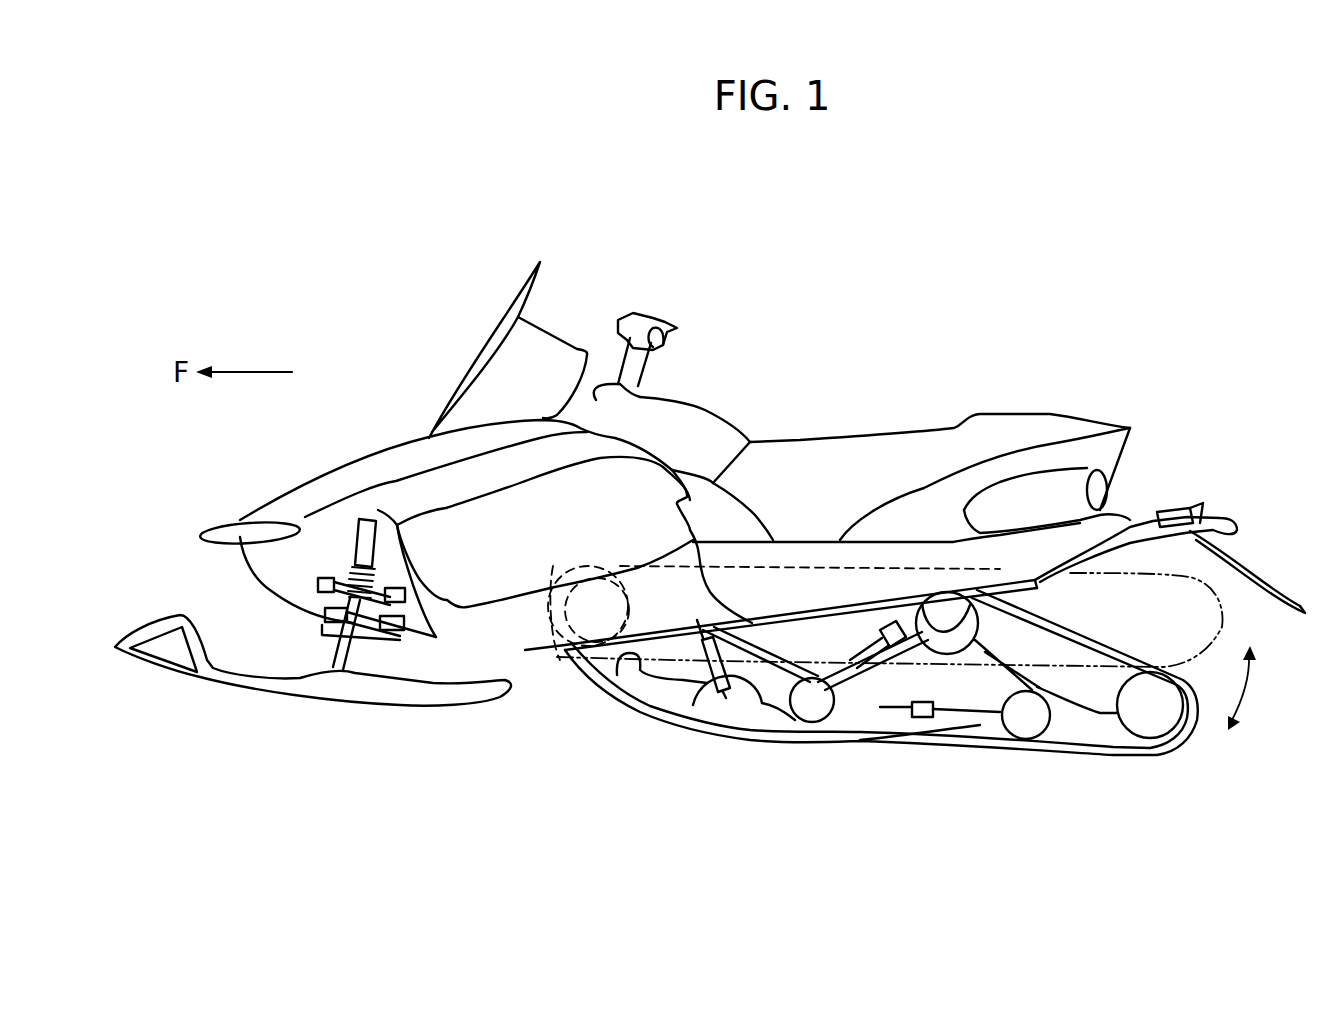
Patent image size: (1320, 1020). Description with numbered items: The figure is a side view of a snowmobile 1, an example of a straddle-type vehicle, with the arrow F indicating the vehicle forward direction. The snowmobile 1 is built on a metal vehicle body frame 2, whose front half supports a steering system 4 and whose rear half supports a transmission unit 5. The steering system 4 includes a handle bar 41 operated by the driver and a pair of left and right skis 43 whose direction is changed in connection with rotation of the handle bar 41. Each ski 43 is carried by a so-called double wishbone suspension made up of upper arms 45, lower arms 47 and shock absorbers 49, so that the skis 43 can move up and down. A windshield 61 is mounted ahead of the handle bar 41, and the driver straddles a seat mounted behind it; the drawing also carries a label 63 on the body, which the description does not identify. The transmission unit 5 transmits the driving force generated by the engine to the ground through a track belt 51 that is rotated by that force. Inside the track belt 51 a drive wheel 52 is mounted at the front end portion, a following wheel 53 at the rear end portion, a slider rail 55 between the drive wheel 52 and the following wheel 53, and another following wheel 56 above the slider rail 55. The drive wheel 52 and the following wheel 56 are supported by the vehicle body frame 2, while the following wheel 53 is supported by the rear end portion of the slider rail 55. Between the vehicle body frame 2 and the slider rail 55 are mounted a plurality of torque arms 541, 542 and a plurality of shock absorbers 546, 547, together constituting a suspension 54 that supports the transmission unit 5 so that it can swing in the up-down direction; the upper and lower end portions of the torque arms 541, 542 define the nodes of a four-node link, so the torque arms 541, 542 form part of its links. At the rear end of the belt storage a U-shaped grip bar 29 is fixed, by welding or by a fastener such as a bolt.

The snowmobile 1 is at (393, 296).
The vehicle body frame 2 is at (807, 550).
The steering system 4 is at (622, 313).
The handle bar 41 is at (663, 325).
The skis 43 is at (286, 698).
The upper arms 45 is at (333, 587).
The lower arms 47 is at (393, 628).
The shock absorbers 49 is at (362, 552).
The transmission unit 5 is at (640, 713).
The track belt 51 is at (713, 730).
The drive wheel 52 is at (559, 658).
The following wheel 53 is at (1157, 727).
The suspension 54 is at (853, 703).
The torque arm 541 is at (756, 662).
The torque arm 542 is at (950, 652).
The shock absorber 546 is at (700, 677).
The shock absorber 547 is at (917, 675).
The slider rail 55 is at (960, 727).
The following wheel 56 is at (975, 620).
The windshield 61 is at (503, 343).
The side cover 63 is at (920, 447).
The grip bar 29 is at (1227, 519).